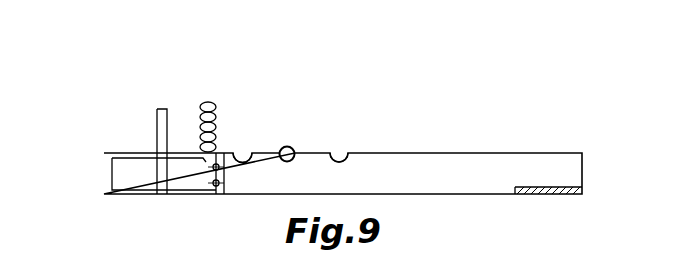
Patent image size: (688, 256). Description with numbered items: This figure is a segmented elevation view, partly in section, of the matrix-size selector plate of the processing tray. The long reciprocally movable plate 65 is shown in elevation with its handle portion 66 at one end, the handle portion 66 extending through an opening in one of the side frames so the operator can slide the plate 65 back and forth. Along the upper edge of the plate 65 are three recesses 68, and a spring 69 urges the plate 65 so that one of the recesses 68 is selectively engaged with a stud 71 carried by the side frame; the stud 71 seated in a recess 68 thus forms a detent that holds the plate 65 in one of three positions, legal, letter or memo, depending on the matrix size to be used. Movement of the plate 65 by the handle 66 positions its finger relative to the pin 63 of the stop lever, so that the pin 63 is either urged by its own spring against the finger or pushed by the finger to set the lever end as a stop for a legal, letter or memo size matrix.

The pin 63 is at (238, 152).
The reciprocally movable plate 65 is at (560, 194).
The handle portion 66 is at (107, 175).
The recesses 68 is at (279, 149).
The spring 69 is at (216, 114).
The stud 71 is at (296, 148).